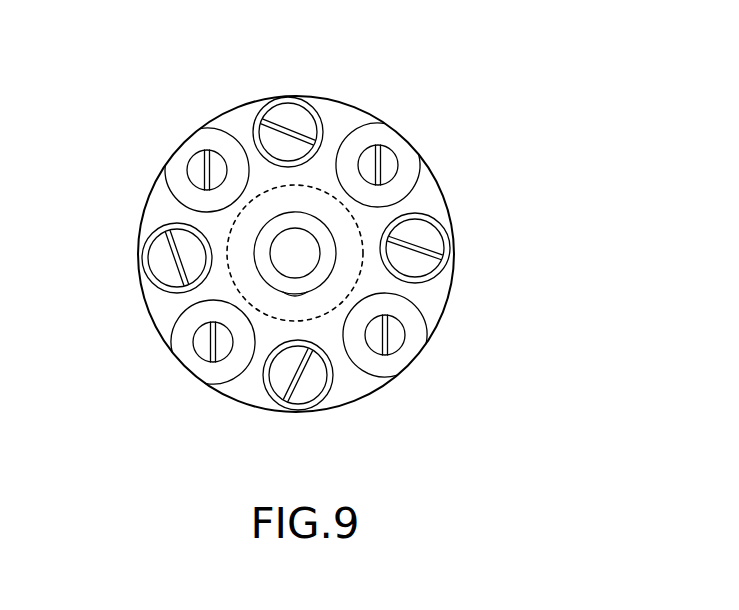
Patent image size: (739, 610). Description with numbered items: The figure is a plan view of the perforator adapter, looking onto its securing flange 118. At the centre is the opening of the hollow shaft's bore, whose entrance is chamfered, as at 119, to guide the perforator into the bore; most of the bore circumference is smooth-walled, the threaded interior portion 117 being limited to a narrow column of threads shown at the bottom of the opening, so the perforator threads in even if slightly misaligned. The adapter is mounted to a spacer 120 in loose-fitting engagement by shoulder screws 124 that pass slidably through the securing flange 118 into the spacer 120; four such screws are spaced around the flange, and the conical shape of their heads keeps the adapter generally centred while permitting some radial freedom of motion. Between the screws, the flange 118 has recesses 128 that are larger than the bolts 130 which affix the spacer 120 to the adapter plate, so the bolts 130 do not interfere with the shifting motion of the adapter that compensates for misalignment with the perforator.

The threaded interior portion 117 is at (287, 293).
The securing flange 118 is at (330, 112).
The chamfer 119 is at (325, 232).
The spacer 120 is at (363, 135).
The shoulder screws 124 is at (288, 112).
The recesses 128 is at (173, 180).
The bolts 130 is at (193, 157).